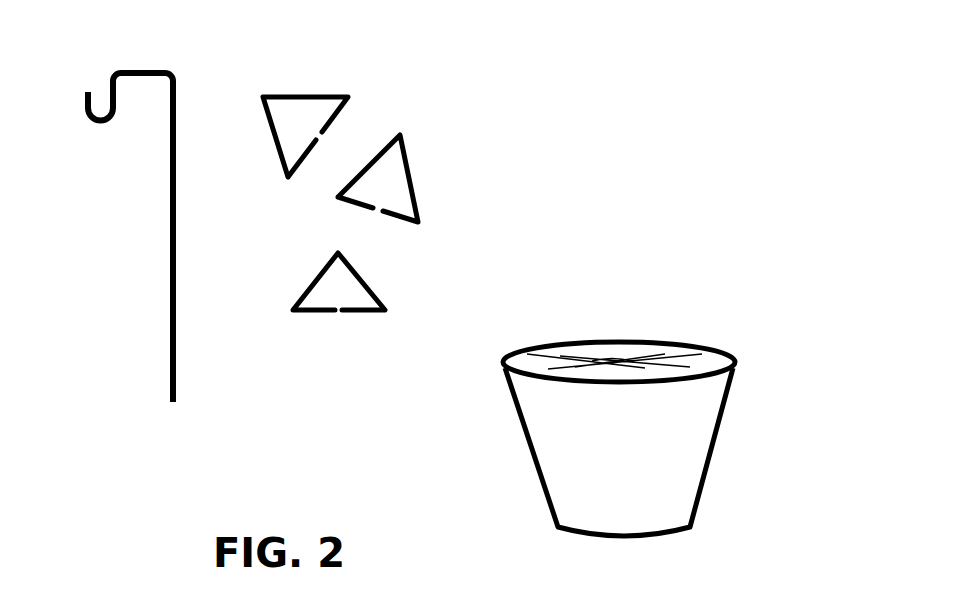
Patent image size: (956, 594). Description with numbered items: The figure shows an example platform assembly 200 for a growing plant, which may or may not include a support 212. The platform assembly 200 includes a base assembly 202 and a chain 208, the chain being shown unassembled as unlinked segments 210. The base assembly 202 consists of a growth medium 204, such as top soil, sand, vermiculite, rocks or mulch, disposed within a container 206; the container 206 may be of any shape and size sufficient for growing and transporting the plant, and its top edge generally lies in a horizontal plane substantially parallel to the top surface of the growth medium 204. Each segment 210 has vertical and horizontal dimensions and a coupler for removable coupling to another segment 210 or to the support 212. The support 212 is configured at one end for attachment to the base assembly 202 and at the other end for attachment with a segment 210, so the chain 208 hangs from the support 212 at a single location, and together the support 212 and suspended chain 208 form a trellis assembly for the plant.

The platform assembly 200 is at (643, 86).
The base assembly 202 is at (693, 328).
The growth medium 204 is at (598, 366).
The container 206 is at (690, 433).
The chain 208 is at (425, 87).
The segment 210 is at (320, 92).
The support 212 is at (115, 71).